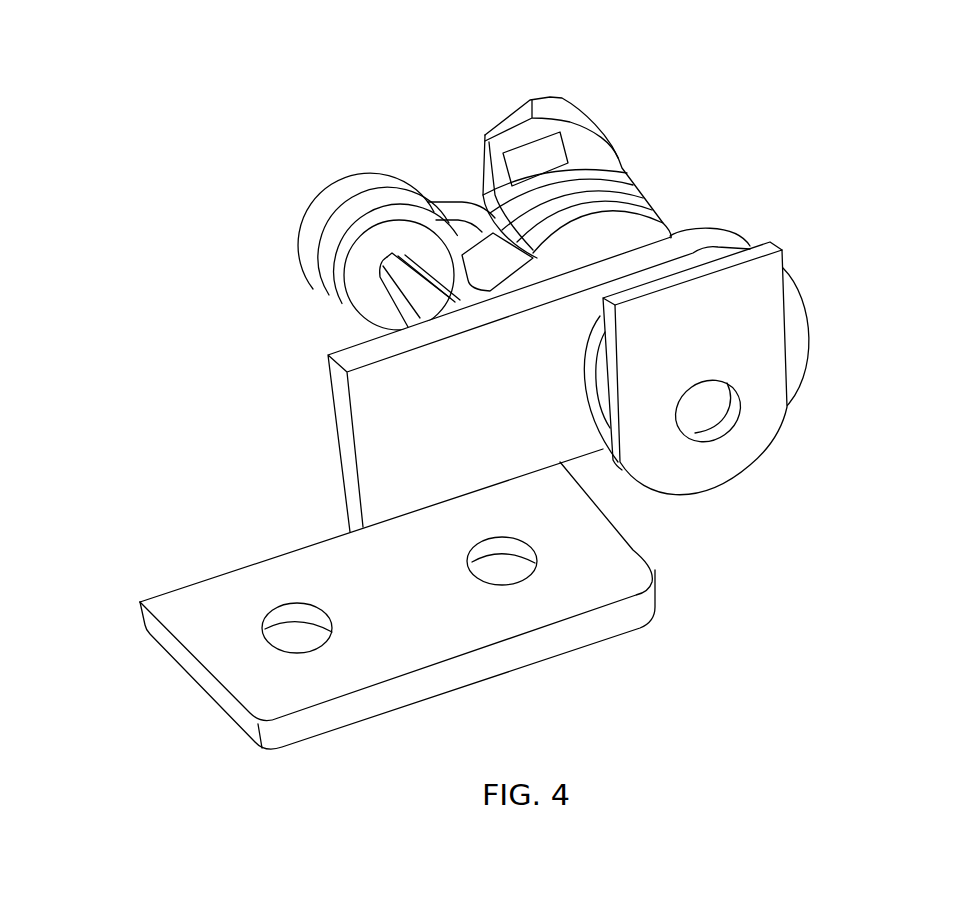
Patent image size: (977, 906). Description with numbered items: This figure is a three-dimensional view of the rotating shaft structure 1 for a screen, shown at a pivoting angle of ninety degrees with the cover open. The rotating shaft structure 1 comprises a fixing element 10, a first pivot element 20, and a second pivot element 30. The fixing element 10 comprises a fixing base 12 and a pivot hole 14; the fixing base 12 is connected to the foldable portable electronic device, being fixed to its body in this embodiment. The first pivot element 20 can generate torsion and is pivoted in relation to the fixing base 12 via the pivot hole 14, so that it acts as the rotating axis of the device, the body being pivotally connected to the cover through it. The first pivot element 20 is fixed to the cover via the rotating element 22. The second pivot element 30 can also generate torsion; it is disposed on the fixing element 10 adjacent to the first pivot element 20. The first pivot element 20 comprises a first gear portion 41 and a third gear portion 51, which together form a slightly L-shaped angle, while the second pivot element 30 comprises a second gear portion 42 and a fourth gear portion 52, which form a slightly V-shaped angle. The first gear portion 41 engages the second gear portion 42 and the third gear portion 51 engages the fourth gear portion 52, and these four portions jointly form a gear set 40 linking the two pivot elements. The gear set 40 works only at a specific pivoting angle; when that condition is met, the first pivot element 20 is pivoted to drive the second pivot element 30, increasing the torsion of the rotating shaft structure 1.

The rotating shaft structure 1 is at (205, 215).
The fixing element 10 is at (158, 708).
The fixing base 12 is at (437, 618).
The pivot hole 14 is at (615, 463).
The first pivot element 20 is at (541, 107).
The rotating element 22 is at (748, 307).
The second pivot element 30 is at (398, 290).
The gear set 40 is at (513, 55).
The first gear portion 41 is at (453, 223).
The second gear portion 42 is at (498, 258).
The third gear portion 51 is at (528, 155).
The fourth gear portion 52 is at (425, 260).